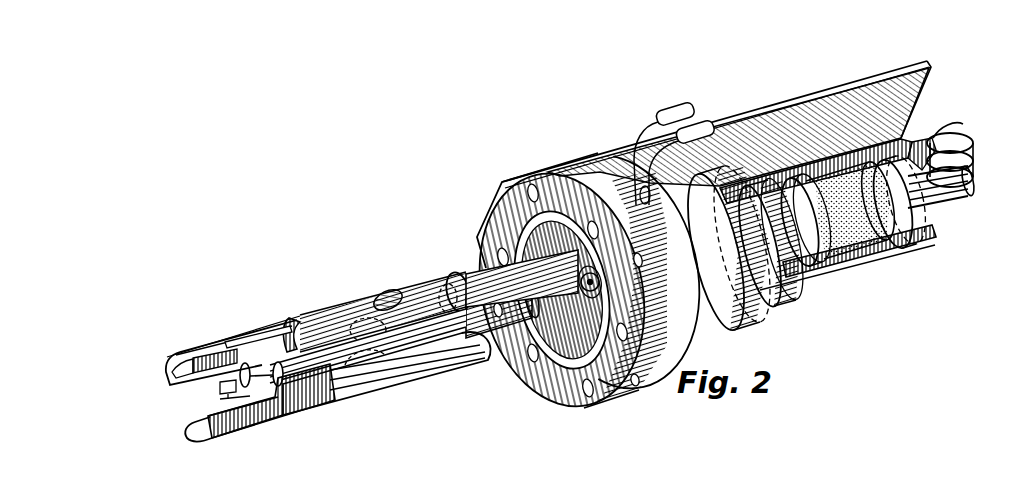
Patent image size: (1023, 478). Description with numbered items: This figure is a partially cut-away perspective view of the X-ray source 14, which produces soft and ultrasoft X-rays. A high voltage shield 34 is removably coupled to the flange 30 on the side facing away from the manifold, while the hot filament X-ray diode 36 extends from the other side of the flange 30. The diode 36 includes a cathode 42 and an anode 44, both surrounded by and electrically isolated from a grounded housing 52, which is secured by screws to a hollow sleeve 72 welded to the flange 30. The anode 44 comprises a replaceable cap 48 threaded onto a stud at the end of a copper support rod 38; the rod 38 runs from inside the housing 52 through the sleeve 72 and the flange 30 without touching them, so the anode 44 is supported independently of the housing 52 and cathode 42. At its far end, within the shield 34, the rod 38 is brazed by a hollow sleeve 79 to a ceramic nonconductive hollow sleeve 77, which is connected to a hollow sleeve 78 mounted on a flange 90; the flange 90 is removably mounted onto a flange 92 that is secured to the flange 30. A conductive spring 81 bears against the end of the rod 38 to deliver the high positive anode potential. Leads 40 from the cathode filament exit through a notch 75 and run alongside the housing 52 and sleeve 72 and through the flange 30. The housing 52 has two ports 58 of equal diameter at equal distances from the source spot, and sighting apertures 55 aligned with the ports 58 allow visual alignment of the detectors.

The source 14 is at (588, 134).
The flange 30 is at (567, 170).
The high voltage shield 34 is at (790, 102).
The hot filament X-ray diode 36 is at (297, 294).
The support rod 38 is at (963, 192).
The leads 40 is at (540, 323).
The cathode 42 is at (235, 352).
The anode 44 is at (350, 398).
The cap 48 is at (372, 380).
The housing 52 is at (420, 286).
The sighting apertures 55 is at (384, 298).
The ports 58 is at (293, 325).
The hollow sleeve 72 is at (477, 281).
The notch 75 is at (194, 427).
The nonconductive hollow sleeve 77 is at (850, 258).
The hollow sleeve 78 is at (797, 268).
The hollow sleeve 79 is at (912, 242).
The conductive spring 81 is at (970, 137).
The flange 90 is at (763, 305).
The flange 92 is at (733, 300).